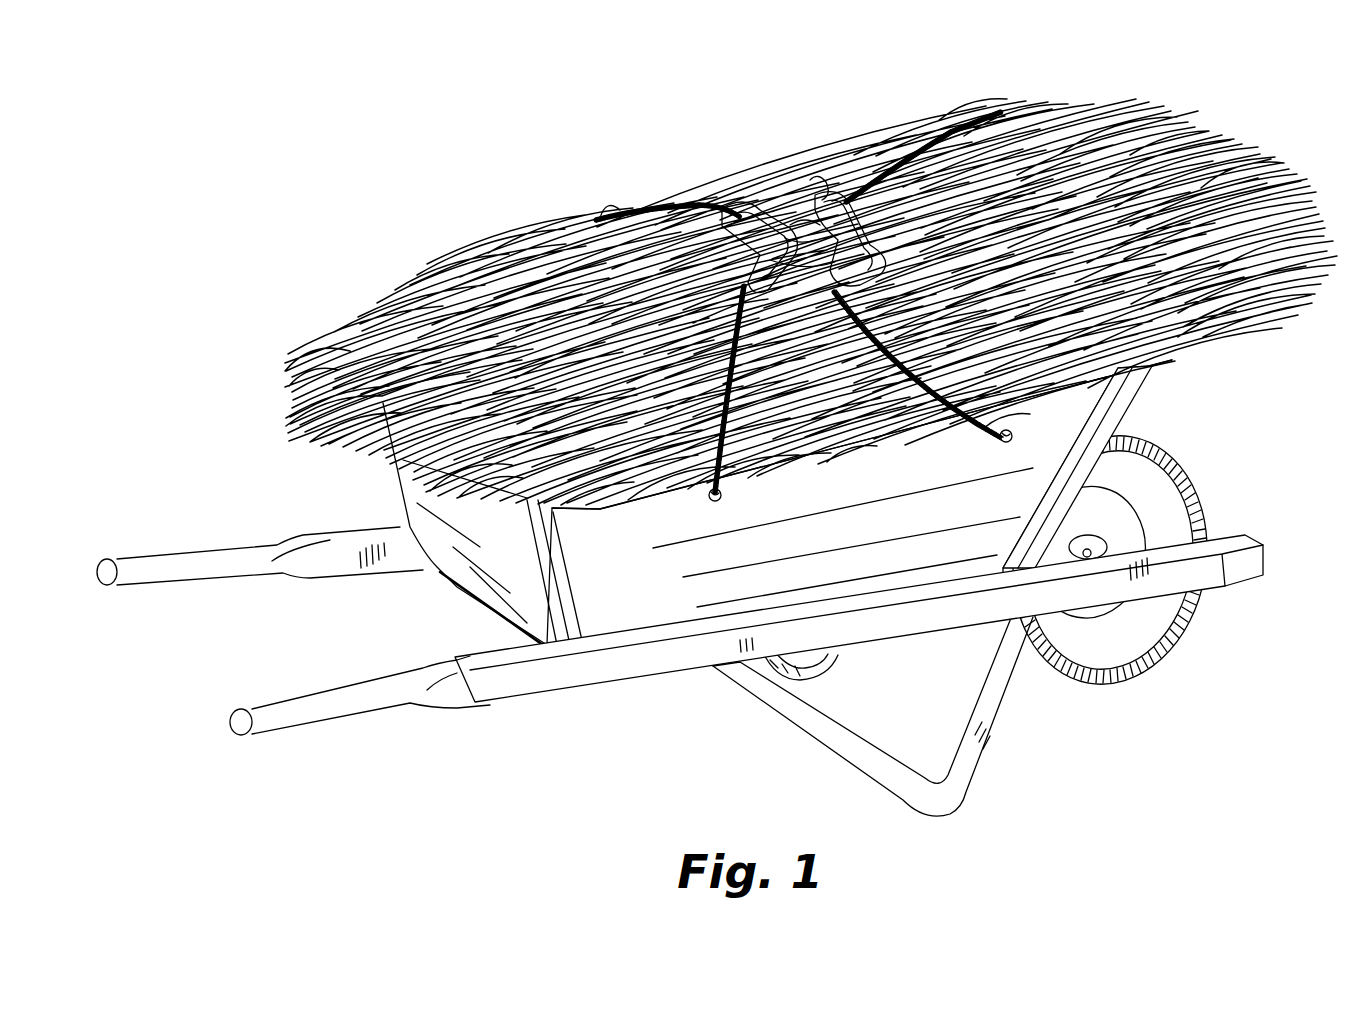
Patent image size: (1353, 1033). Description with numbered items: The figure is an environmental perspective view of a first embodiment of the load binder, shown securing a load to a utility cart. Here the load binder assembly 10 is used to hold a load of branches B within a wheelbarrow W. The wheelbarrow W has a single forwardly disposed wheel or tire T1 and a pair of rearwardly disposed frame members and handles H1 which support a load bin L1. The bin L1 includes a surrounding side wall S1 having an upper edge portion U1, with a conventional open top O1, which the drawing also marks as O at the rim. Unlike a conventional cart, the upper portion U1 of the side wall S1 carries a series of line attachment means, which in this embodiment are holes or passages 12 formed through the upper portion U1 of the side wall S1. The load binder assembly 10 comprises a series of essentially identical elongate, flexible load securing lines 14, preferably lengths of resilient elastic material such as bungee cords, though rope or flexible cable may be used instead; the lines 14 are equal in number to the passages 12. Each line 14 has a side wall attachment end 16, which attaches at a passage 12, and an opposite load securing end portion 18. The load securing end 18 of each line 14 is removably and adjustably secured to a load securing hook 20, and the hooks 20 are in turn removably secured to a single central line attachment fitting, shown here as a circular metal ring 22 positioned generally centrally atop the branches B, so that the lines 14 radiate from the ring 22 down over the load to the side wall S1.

The wheelbarrow W is at (565, 742).
The frame member and handle H1 is at (300, 580).
The load bin L1 is at (495, 615).
The side wall S1 is at (483, 556).
The upper edge portion U1 is at (930, 497).
The wheel or tire T1 is at (1065, 690).
The branches B is at (1243, 175).
The tray corner post O is at (1157, 383).
The open top O1 is at (430, 383).
The load binder assembly 10 is at (732, 177).
The holes or passages 12 is at (1015, 436).
The load securing lines 14 is at (607, 212).
The side wall attachment end 16 is at (1000, 425).
The load securing end portion 18 is at (690, 200).
The load securing hook 20 is at (748, 222).
The circular metal ring 22 is at (790, 207).